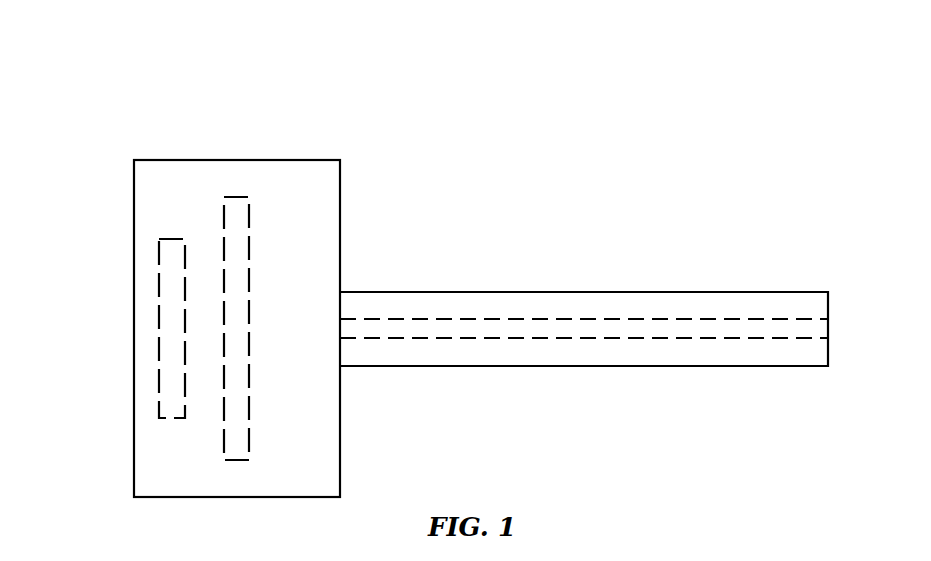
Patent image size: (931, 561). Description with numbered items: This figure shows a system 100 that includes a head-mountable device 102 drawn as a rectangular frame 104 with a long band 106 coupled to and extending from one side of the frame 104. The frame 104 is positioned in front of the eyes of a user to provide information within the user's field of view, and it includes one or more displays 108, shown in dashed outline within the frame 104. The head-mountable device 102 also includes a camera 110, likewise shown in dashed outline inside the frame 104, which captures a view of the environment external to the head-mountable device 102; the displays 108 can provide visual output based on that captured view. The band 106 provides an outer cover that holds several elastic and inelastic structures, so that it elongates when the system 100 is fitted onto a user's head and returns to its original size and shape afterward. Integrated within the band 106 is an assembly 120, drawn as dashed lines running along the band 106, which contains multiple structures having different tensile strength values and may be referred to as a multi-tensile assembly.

The system 100 is at (777, 117).
The head-mountable device 102 is at (99, 176).
The frame 104 is at (305, 160).
The band 106 is at (560, 292).
The displays 108 is at (224, 214).
The camera 110 is at (160, 340).
The assembly 120 is at (703, 318).